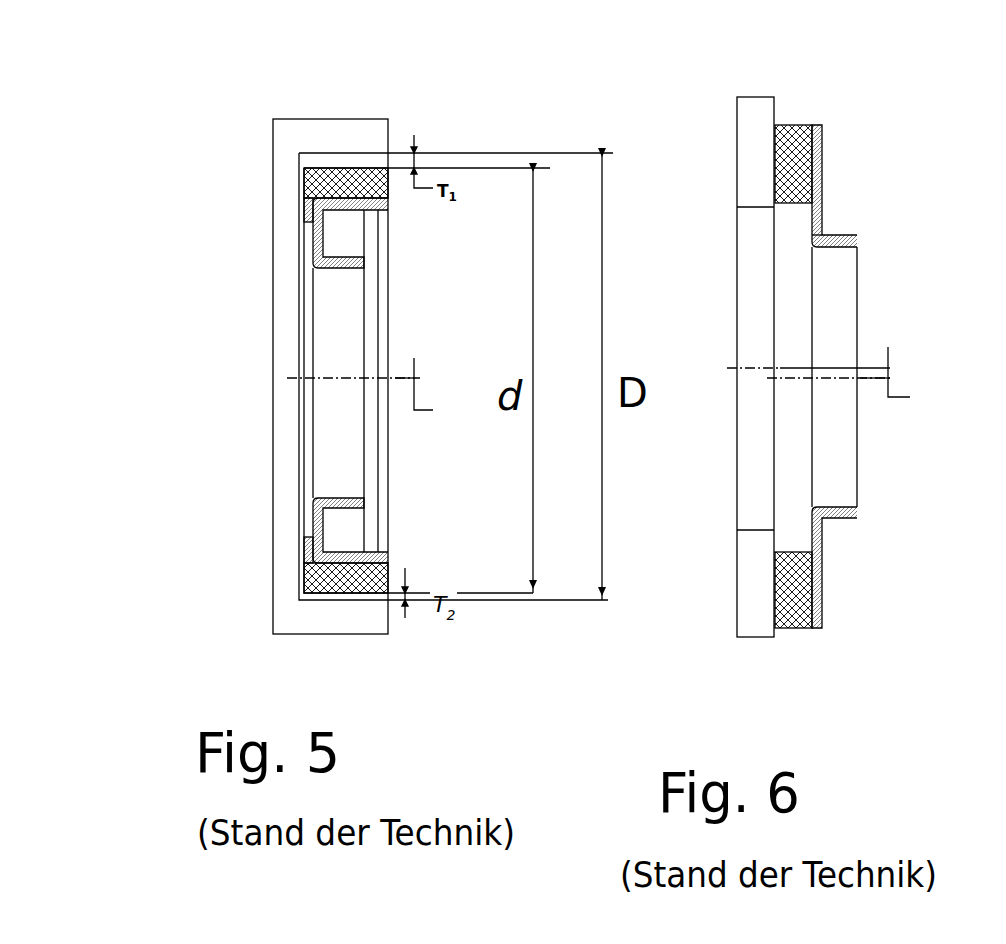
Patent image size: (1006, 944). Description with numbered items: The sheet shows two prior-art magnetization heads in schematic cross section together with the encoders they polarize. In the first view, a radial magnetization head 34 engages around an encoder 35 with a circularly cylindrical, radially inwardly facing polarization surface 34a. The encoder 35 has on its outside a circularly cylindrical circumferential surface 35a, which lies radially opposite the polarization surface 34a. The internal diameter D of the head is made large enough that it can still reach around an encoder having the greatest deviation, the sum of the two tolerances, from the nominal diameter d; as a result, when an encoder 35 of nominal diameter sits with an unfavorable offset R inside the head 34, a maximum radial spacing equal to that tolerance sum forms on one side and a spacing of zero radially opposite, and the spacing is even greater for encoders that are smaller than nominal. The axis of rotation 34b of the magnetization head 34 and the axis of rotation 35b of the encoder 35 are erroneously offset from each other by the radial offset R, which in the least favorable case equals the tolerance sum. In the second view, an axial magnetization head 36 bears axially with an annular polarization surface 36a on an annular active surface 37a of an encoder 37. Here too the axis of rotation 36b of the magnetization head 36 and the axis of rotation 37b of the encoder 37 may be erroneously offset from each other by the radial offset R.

In FIG. 5, the radial magnetization head 34 is at (282, 432).
In FIG. 5, the polarization surface 34a is at (345, 158).
In FIG. 5, the axis of rotation 34b is at (395, 375).
In FIG. 5, the encoder 35 is at (387, 193).
In FIG. 5, the circumferential surface 35a is at (330, 168).
In FIG. 5, the axis of rotation 35b is at (398, 383).
In FIG. 6, the axial magnetization head 36 is at (762, 607).
In FIG. 6, the polarization surface 36a is at (777, 112).
In FIG. 6, the axis of rotation 36b is at (872, 363).
In FIG. 6, the encoder 37 is at (813, 127).
In FIG. 6, the active surface 37a is at (778, 162).
In FIG. 6, the axis of rotation 37b is at (871, 380).